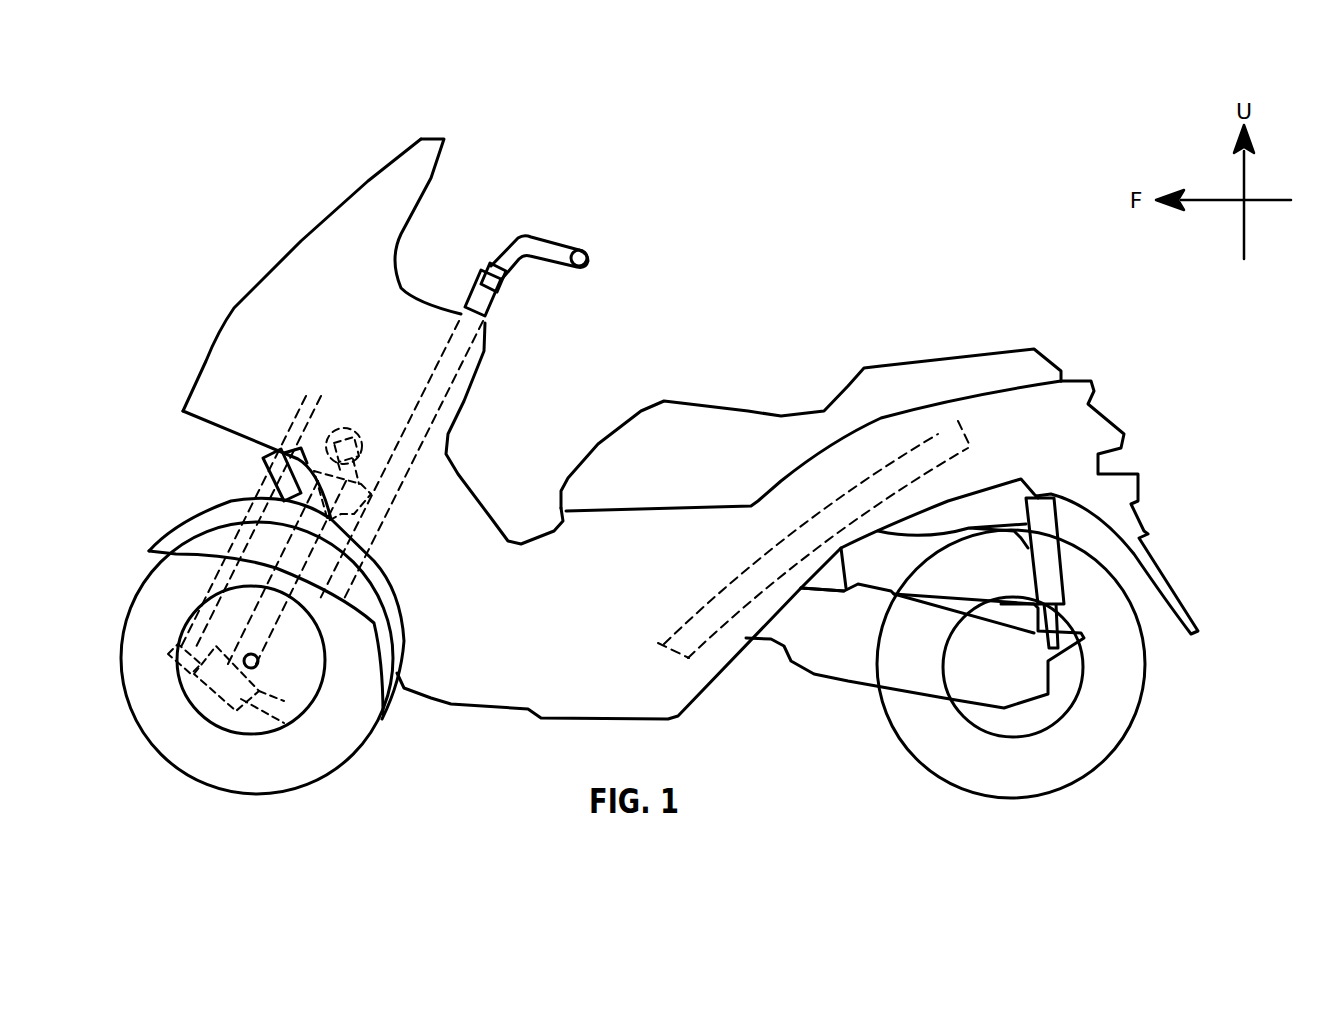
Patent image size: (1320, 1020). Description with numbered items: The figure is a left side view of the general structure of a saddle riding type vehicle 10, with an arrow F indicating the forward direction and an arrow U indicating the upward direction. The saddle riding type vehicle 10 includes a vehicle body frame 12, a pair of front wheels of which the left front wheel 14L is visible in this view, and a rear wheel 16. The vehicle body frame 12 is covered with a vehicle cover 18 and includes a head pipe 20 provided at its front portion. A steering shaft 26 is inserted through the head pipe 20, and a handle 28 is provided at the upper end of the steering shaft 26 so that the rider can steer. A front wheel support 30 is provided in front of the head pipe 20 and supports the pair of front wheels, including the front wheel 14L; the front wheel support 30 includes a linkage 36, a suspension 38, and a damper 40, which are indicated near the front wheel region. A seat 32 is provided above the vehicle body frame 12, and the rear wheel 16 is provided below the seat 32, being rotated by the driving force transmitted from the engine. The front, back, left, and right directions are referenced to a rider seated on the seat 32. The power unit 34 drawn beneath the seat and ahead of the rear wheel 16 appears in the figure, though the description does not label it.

The saddle riding type vehicle 10 is at (362, 160).
The vehicle body frame 12 is at (928, 440).
The front wheel 14L is at (350, 740).
The rear wheel 16 is at (1135, 713).
The vehicle cover 18 is at (707, 690).
The head pipe 20 is at (490, 303).
The steering shaft 26 is at (482, 278).
The handle 28 is at (564, 238).
The front wheel support 30 is at (238, 487).
The seat 32 is at (742, 407).
The power unit 34 is at (850, 683).
The linkage 36 is at (225, 703).
The suspension 38 is at (357, 427).
The damper 40 is at (260, 466).